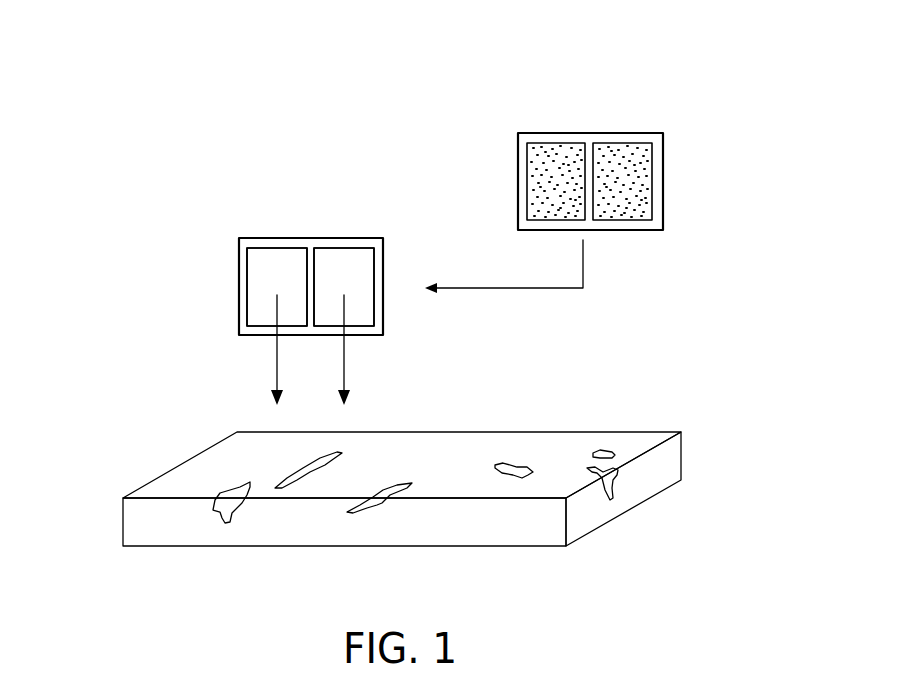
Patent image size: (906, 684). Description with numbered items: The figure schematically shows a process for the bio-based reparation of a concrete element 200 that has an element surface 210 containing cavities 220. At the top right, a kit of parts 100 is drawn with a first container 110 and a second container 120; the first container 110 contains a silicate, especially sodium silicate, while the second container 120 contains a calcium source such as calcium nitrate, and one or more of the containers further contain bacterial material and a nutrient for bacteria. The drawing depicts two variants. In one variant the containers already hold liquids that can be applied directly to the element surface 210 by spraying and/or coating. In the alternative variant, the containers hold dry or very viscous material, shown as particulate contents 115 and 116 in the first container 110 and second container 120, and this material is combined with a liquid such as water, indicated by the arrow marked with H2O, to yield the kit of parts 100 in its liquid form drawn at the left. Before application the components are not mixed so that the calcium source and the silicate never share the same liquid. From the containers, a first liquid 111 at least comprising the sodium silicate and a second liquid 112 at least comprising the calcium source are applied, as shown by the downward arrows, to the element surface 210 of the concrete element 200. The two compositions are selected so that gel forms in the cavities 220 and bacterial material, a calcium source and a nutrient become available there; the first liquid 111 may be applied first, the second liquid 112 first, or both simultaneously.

The kit of parts 100 is at (436, 206).
The first container 110 is at (550, 148).
The second container 120 is at (625, 150).
The first composition (particulate) in first compartment 115 is at (538, 182).
The second composition (particulate) in second compartment 116 is at (636, 195).
The first liquid 111 is at (256, 304).
The second liquid 112 is at (363, 310).
The concrete element 200 is at (405, 475).
The element surface 210 is at (169, 487).
The cavities 220 is at (215, 512).